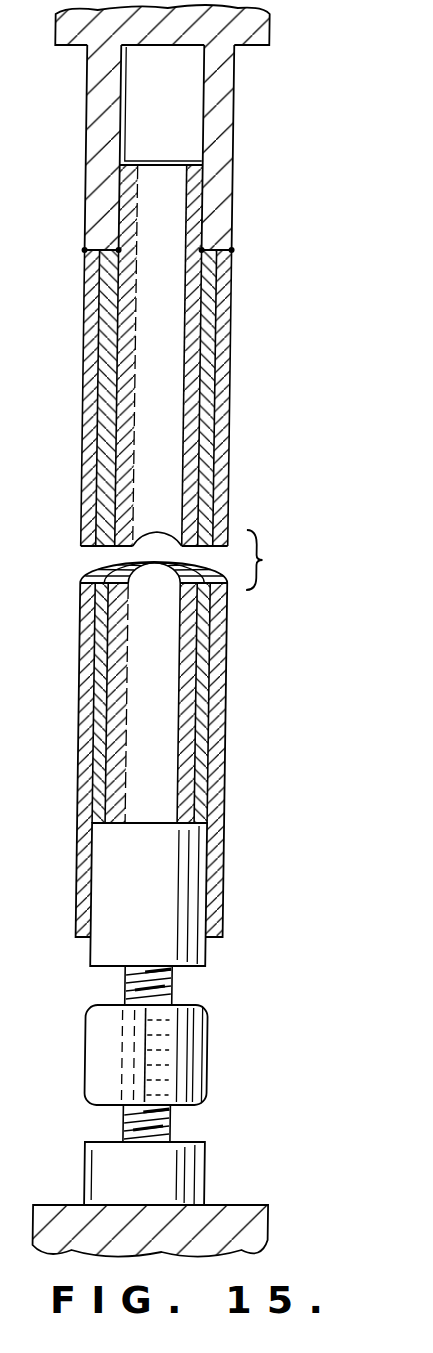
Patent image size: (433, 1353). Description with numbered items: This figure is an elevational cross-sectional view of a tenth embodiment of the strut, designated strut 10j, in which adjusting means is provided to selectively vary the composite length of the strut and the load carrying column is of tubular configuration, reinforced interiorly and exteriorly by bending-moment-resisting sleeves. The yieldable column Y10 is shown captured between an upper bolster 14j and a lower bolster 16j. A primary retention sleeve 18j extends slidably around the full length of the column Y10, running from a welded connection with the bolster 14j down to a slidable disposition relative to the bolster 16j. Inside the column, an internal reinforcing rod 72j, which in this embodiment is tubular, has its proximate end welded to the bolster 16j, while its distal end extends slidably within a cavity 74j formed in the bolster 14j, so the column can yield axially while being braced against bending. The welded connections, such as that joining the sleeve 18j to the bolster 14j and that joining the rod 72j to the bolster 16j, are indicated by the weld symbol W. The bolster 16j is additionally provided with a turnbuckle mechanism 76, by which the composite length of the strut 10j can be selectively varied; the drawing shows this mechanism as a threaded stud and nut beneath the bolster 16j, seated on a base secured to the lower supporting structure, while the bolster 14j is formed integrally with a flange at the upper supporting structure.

The bolster 14j is at (219, 118).
The cavity 74j is at (118, 116).
The internal reinforcing rod 72j is at (117, 315).
The weld W is at (198, 249).
The strut 10j is at (232, 402).
The yieldable column Y10 is at (105, 657).
The primary retention sleeve 18j is at (221, 694).
The bolster 16j is at (211, 953).
The turnbuckle mechanism 76 is at (228, 1052).